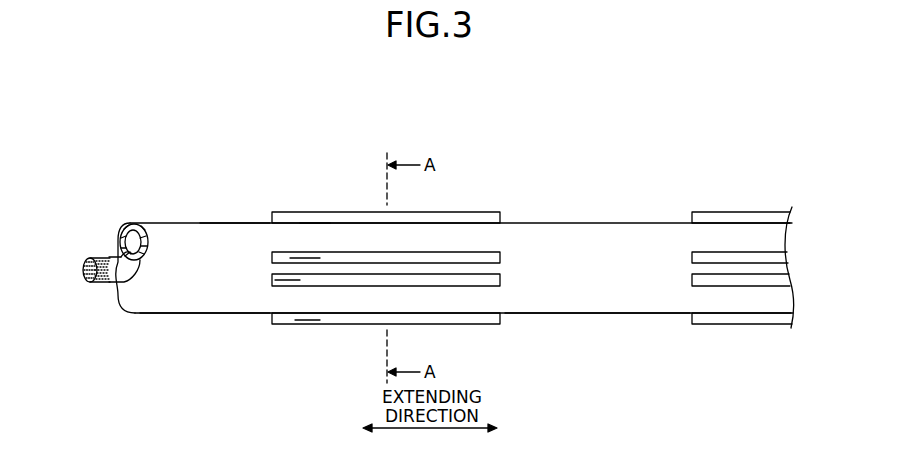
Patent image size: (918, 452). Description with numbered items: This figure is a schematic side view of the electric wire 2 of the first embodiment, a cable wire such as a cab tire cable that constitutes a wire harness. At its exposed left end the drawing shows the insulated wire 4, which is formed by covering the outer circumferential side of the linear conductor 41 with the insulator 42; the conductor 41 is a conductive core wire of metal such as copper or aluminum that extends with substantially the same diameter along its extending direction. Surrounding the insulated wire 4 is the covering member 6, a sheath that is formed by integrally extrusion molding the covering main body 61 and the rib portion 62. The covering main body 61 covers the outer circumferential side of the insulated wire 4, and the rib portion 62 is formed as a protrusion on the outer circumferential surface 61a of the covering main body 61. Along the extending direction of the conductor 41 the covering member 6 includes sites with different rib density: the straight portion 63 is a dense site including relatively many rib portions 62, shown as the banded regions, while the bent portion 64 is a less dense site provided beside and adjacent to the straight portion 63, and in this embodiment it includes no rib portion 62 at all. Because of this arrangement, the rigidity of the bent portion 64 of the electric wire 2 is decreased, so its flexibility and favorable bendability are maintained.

The electric wire 2 is at (306, 157).
The insulated wire 4 is at (65, 381).
The conductor 41 is at (100, 290).
The insulator 42 is at (117, 293).
The covering member 6 is at (295, 381).
The covering main body 61 is at (219, 290).
The outer circumferential surface 61a is at (220, 222).
The rib portion 62 is at (317, 222).
The straight portion 63 is at (485, 203).
The bent portion 64 is at (173, 326).